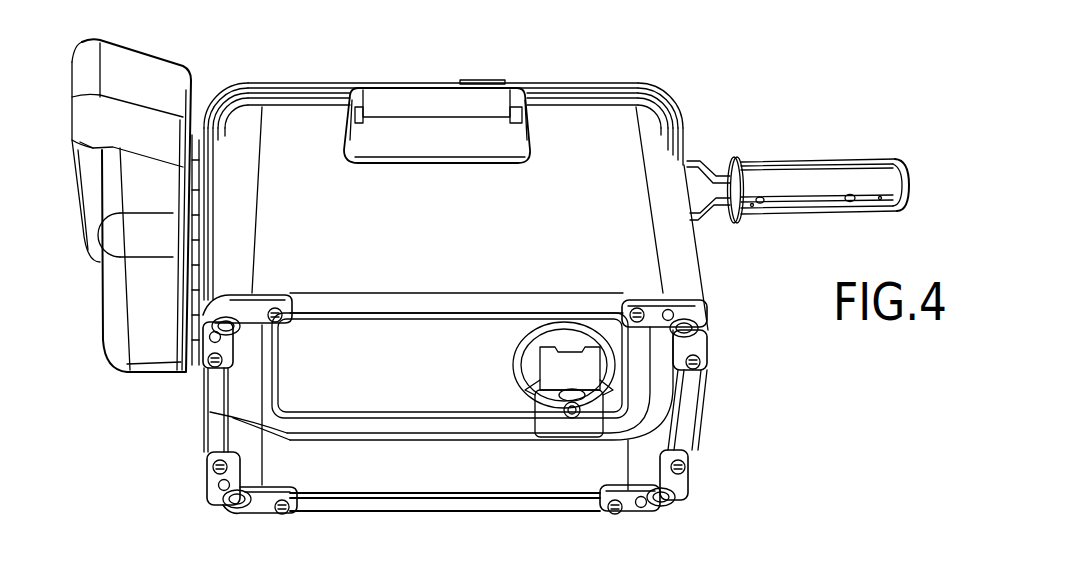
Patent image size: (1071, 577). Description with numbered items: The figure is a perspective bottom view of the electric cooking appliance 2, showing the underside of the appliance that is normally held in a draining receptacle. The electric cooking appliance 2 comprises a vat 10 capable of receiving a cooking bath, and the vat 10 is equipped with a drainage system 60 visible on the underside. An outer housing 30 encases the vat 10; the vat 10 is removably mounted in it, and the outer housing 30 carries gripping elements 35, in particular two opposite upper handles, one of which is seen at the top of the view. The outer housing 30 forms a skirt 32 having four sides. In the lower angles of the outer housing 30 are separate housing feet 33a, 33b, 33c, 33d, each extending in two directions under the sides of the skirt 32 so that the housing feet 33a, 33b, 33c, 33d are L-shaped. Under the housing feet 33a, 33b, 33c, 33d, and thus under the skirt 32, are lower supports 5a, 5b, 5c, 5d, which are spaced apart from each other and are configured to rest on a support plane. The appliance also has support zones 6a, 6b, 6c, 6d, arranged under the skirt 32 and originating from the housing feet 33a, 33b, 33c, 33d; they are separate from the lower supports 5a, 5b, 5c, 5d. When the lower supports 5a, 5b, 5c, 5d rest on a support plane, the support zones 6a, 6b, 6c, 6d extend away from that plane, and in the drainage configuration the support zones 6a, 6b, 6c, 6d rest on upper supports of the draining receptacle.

The electric cooking appliance 2 is at (720, 86).
The gripping elements 35 is at (425, 140).
The vat 10 is at (392, 392).
The skirt 32 is at (446, 463).
The outer housing 30 is at (713, 435).
The drainage system 60 is at (572, 418).
The housing foot 33a is at (676, 482).
The housing foot 33b is at (213, 470).
The housing foot 33c is at (216, 350).
The housing foot 33d is at (702, 362).
The lower support 5a is at (664, 500).
The lower support 5b is at (236, 503).
The lower support 5c is at (222, 325).
The lower support 5d is at (692, 328).
The support zone 6a is at (615, 512).
The support zone 6b is at (282, 511).
The support zone 6c is at (275, 320).
The support zone 6d is at (642, 310).